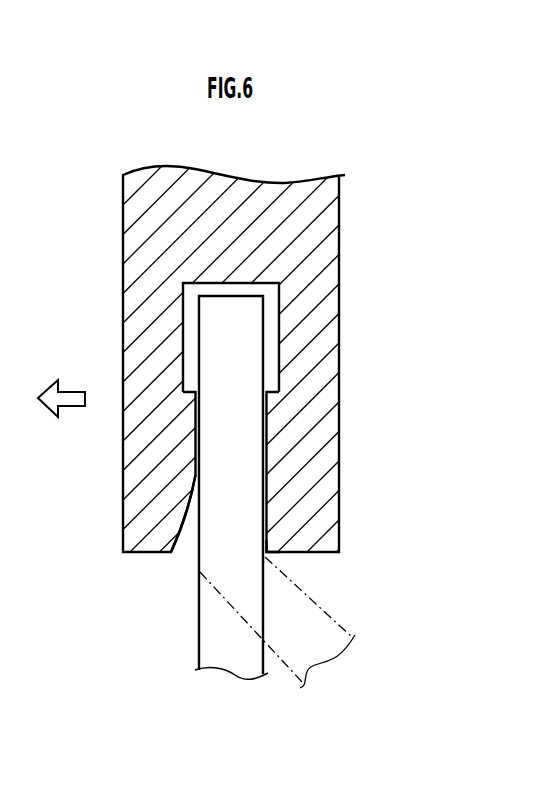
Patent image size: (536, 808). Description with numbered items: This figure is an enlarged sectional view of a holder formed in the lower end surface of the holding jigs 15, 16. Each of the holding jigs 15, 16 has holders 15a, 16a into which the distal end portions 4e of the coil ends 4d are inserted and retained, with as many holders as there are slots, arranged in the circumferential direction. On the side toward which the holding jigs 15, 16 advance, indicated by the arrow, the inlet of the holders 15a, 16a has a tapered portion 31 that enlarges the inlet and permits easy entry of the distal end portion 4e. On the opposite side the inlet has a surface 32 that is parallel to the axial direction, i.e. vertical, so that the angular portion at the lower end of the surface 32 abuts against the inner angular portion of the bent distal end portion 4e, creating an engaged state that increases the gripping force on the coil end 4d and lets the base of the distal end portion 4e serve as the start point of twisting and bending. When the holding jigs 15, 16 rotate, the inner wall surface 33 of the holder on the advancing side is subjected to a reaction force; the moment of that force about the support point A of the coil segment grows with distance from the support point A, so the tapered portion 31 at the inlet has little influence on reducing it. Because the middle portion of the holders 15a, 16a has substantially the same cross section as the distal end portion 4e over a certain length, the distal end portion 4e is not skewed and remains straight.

The holding jig 15 is at (268, 360).
The holding jig 16 is at (341, 251).
The holder 15a is at (315, 337).
The holder 16a is at (272, 350).
The surface 32 is at (252, 438).
The distal end portion 4e is at (253, 465).
The inner wall surface 33 is at (210, 447).
The tapered portion 31 is at (186, 532).
The support point A is at (263, 555).
The coil end 4d is at (207, 637).